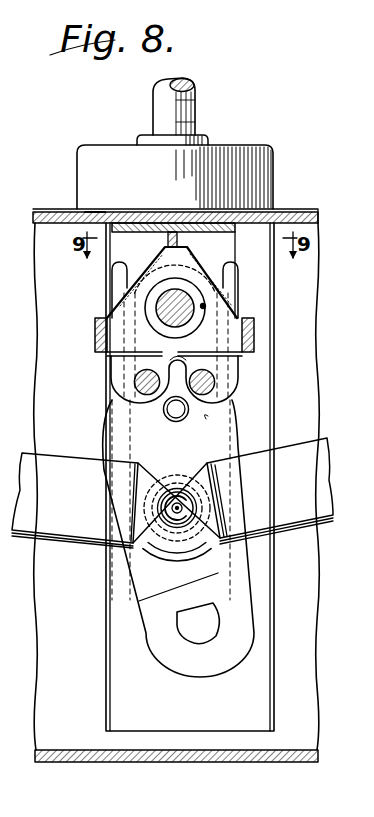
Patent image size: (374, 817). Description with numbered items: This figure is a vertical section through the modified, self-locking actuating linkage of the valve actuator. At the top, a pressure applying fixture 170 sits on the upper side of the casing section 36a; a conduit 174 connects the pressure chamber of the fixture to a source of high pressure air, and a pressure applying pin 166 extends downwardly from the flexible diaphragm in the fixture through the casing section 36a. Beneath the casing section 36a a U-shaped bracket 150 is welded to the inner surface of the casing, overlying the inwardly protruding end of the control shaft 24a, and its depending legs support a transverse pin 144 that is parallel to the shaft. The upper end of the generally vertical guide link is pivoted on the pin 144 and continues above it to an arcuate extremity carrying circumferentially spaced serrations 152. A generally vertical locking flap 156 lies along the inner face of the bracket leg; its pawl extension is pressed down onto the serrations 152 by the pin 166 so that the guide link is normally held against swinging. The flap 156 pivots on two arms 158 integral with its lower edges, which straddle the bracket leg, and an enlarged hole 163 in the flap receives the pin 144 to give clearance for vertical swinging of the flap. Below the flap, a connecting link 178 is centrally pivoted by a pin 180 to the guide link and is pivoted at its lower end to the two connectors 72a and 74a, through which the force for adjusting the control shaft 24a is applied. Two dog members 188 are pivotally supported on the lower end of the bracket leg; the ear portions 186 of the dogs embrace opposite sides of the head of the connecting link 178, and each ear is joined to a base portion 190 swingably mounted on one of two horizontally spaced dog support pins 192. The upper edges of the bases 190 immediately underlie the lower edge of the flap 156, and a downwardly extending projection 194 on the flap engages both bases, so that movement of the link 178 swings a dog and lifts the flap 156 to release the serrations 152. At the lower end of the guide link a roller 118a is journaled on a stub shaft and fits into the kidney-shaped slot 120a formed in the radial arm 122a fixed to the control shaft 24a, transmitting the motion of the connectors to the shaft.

The conduit 174 is at (197, 110).
The pressure applying fixture 170 is at (281, 132).
The U-shaped bracket 150 is at (125, 193).
The pressure applying pin 166 is at (165, 217).
The casing section 36a is at (293, 217).
The serrations 152 is at (148, 252).
The ear portions 186 is at (114, 276).
The transverse pin 144 is at (180, 296).
The locking flap 156 is at (210, 293).
The enlarged hole 163 is at (207, 307).
The arms 158 is at (96, 326).
The dog members 188 is at (108, 367).
The base portion 190 is at (163, 354).
The downwardly extending projection 194 is at (180, 352).
The dog support pins 192 is at (137, 381).
The pin 180 is at (180, 422).
The kidney-shaped slot 120a is at (208, 416).
The connecting link 178 is at (138, 423).
The connector 74a is at (322, 500).
The connector 72a is at (77, 524).
The roller 118a is at (172, 541).
The radial arm 122a is at (133, 582).
The control shaft 24a is at (202, 636).